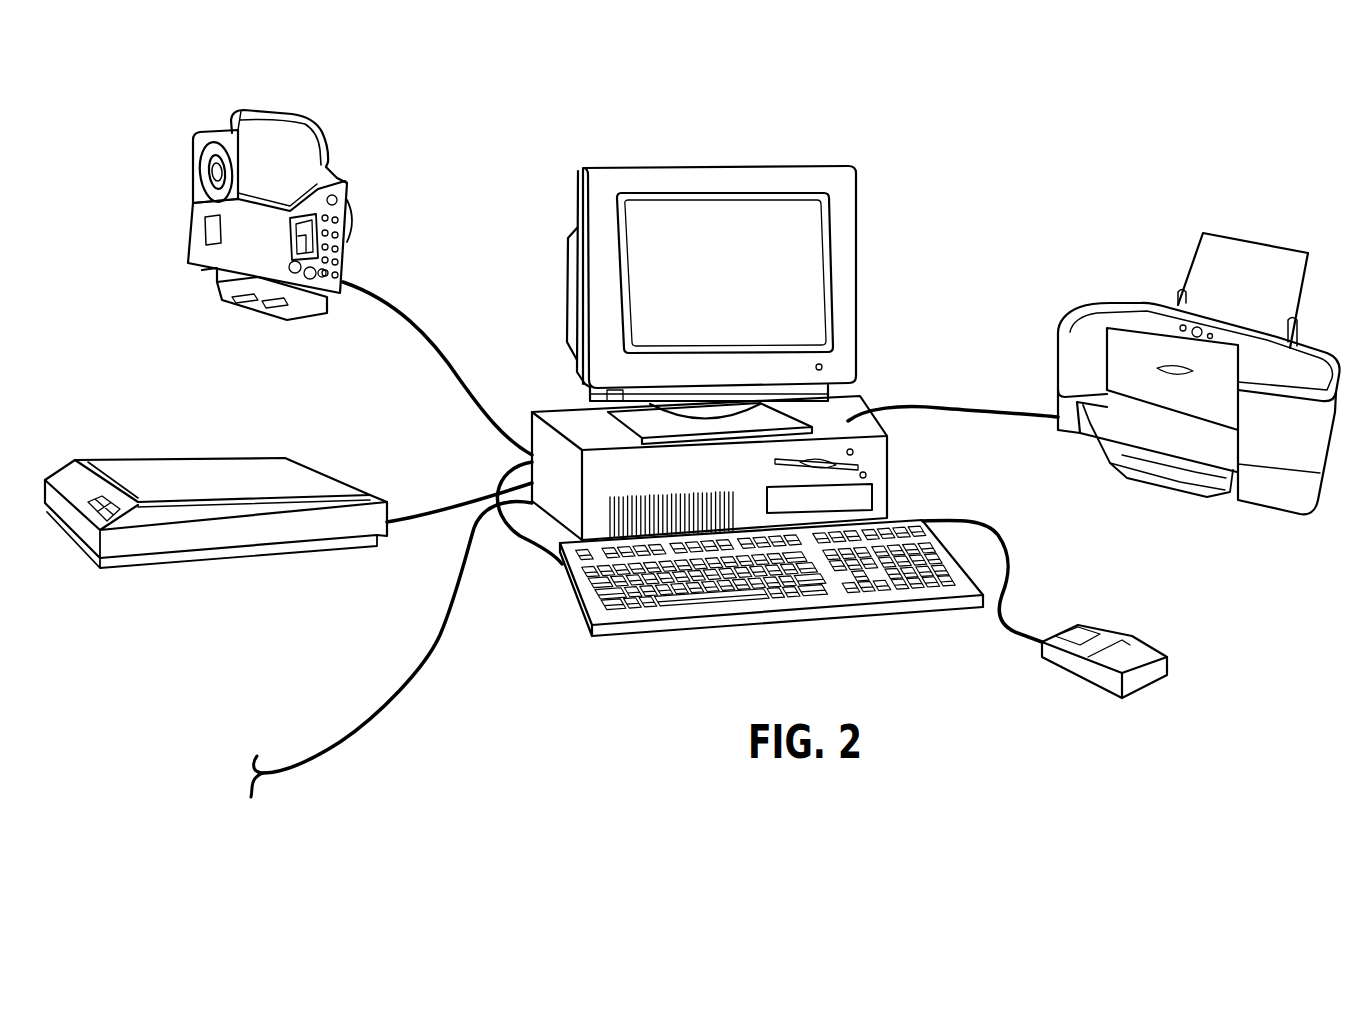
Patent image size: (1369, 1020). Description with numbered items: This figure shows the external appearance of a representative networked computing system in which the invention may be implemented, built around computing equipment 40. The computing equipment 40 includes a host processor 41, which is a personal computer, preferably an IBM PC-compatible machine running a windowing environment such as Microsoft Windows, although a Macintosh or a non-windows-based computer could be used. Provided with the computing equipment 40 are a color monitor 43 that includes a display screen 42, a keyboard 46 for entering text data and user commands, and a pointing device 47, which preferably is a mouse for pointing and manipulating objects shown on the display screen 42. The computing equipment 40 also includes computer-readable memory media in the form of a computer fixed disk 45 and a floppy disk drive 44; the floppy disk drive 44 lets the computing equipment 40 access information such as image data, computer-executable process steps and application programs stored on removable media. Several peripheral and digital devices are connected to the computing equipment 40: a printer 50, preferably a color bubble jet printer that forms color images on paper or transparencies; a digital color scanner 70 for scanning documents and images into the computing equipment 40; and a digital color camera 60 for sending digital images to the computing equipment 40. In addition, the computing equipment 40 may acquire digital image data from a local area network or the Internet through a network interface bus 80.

The computing equipment 40 is at (898, 154).
The host processor 41 is at (543, 410).
The display screen 42 is at (808, 297).
The color monitor 43 is at (687, 164).
The floppy disk drive 44 is at (858, 462).
The computer fixed disk 45 is at (867, 498).
The keyboard 46 is at (658, 612).
The pointing device 47 is at (1147, 688).
The printer 50 is at (1081, 272).
The digital color camera 60 is at (347, 185).
The digital color scanner 70 is at (270, 563).
The network interface bus 80 is at (324, 804).